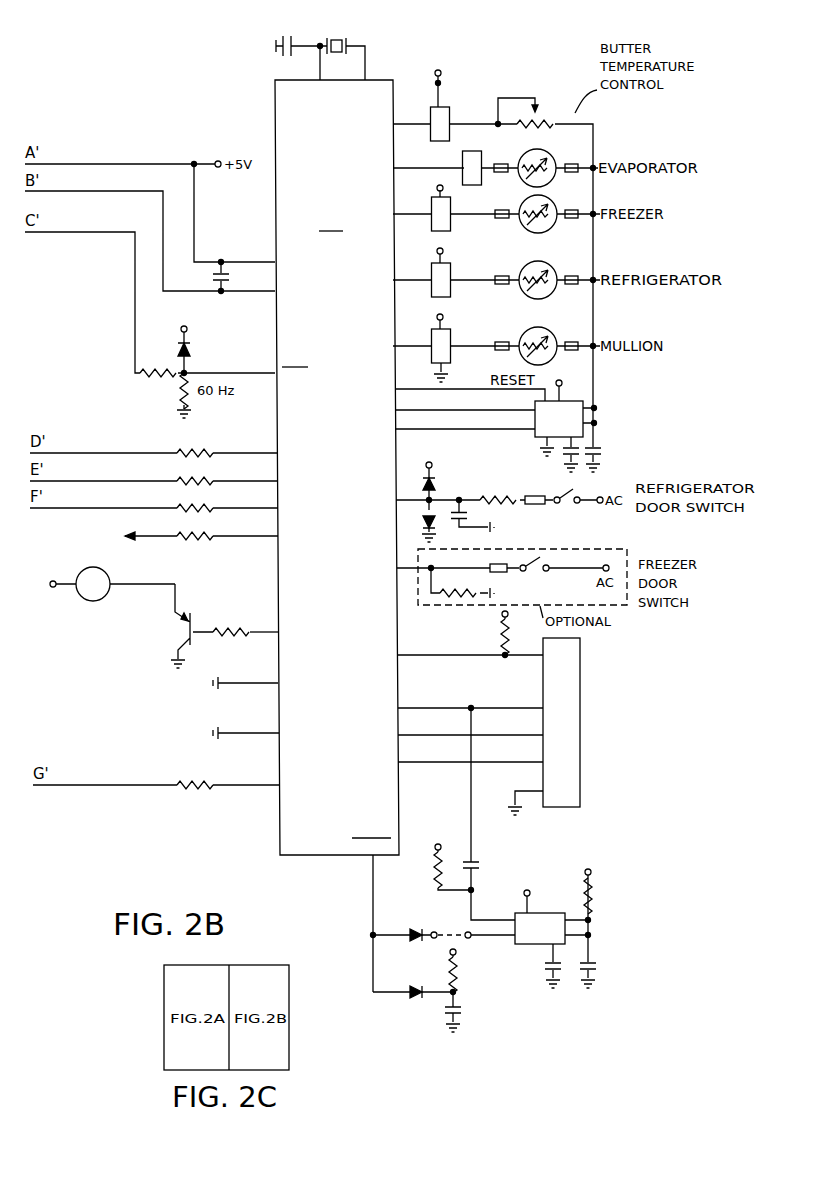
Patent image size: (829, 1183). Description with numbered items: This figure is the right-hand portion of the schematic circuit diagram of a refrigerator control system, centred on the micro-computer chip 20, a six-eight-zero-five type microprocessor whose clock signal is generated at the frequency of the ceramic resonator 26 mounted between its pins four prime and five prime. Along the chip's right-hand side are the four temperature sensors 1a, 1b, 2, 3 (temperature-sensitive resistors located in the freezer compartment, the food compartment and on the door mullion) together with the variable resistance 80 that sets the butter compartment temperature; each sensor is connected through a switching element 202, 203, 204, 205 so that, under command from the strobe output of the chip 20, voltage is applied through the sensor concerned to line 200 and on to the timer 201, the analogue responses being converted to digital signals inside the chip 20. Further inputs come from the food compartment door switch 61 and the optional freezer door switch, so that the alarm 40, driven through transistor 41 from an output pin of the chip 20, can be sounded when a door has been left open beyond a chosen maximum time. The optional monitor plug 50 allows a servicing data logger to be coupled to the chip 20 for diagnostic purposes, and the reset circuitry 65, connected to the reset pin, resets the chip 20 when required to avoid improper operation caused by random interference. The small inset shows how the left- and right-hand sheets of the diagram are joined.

The micro-computer chip 20 is at (306, 857).
The ceramic resonator 26 is at (346, 44).
The relay 202 is at (450, 120).
The relay 203 is at (451, 222).
The relay 204 is at (452, 271).
The relay 205 is at (452, 337).
The variable resistance 80 is at (537, 118).
The temperature sensor 1a is at (549, 155).
The temperature sensor 1b is at (552, 202).
The temperature sensor 2 is at (551, 269).
The temperature sensor 3 is at (551, 335).
The line 200 is at (600, 393).
The timer 201 is at (532, 437).
The food compartment door switch 61 is at (565, 489).
The alarm 40 is at (104, 574).
The transistor 41 is at (192, 620).
The monitor plug 50 is at (570, 807).
The reset circuitry 65 is at (513, 912).